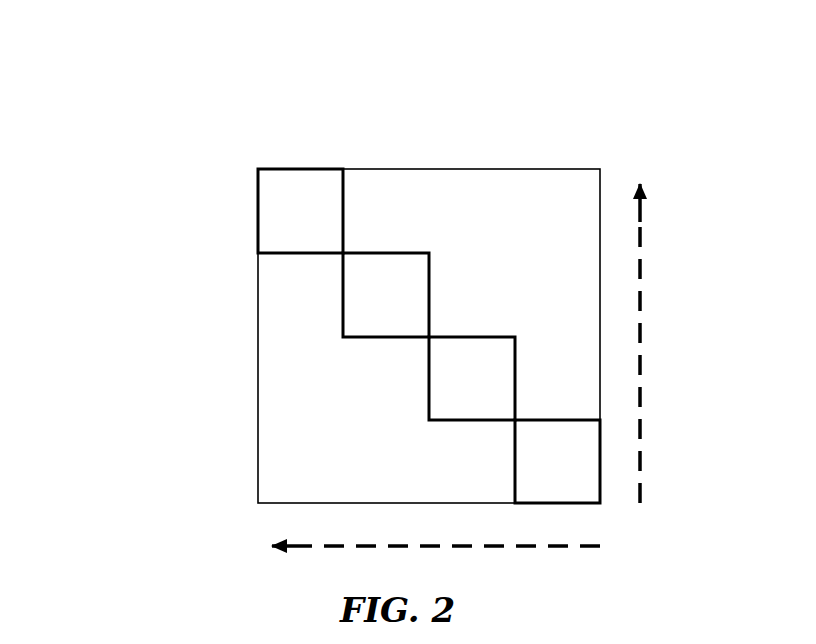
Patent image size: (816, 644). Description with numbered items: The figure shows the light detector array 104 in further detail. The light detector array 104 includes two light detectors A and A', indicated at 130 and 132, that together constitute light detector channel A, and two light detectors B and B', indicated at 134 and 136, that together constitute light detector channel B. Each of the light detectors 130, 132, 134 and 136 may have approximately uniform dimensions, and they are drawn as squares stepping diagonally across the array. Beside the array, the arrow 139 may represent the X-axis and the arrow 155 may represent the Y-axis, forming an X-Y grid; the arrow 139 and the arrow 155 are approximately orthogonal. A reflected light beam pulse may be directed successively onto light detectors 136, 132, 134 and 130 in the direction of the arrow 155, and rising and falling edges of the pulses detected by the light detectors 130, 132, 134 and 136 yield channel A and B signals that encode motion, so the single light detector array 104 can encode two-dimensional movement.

The light detector array 104 is at (142, 88).
The light detector A 130 is at (237, 212).
The light detector B 134 is at (324, 296).
The light detector A' 132 is at (410, 379).
The light detector B' 136 is at (494, 462).
The arrow representing the Y-axis 155 is at (672, 320).
The arrow representing the X-axis 139 is at (545, 578).